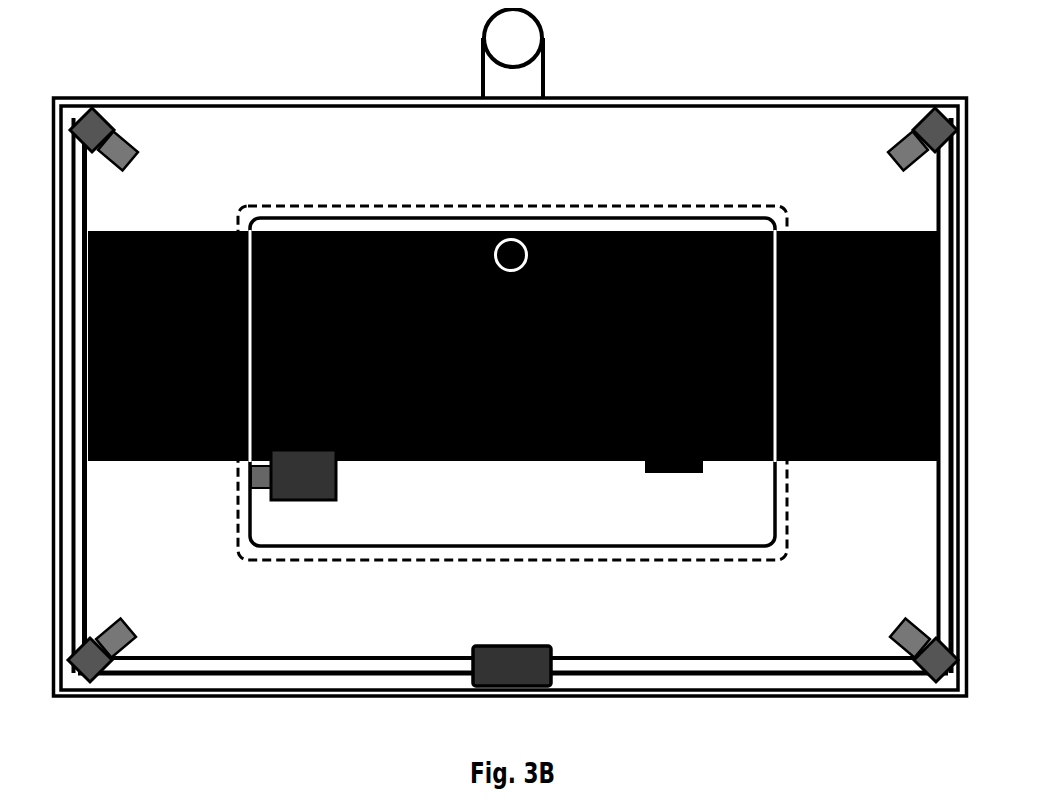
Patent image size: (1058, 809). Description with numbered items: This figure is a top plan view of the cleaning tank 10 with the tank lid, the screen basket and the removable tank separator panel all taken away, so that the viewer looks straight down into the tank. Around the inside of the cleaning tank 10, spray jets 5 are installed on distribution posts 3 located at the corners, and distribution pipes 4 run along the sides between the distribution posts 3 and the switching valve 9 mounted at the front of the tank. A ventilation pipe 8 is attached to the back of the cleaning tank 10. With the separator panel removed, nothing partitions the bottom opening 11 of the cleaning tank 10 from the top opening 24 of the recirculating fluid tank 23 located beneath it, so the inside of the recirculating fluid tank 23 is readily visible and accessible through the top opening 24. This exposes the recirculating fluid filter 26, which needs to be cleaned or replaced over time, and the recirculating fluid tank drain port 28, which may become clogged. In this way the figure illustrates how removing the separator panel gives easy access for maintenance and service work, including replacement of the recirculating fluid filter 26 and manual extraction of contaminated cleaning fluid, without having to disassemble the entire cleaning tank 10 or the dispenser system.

The distribution post 3 is at (108, 112).
The distribution pipe 4 is at (83, 378).
The spray jet 5 is at (123, 165).
The ventilation pipe 8 is at (474, 32).
The switching valve 9 is at (535, 636).
The cleaning tank 10 is at (225, 88).
The bottom opening 11 is at (265, 296).
The recirculating fluid tank 23 is at (590, 405).
The top opening 24 is at (390, 197).
The recirculating fluid filter 26 is at (330, 462).
The recirculating fluid tank drain port 28 is at (508, 265).